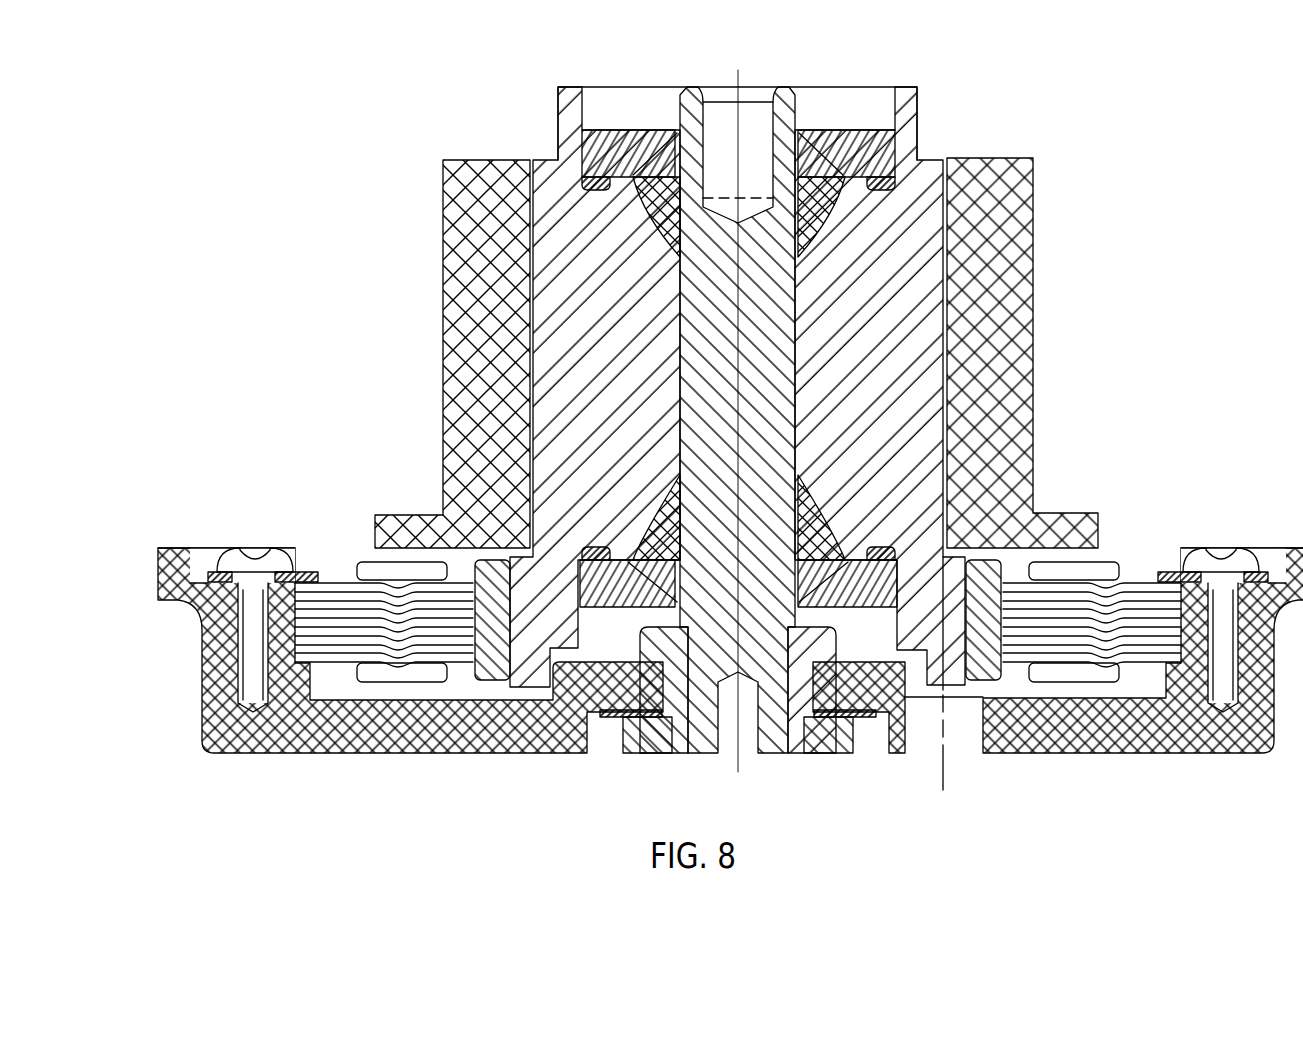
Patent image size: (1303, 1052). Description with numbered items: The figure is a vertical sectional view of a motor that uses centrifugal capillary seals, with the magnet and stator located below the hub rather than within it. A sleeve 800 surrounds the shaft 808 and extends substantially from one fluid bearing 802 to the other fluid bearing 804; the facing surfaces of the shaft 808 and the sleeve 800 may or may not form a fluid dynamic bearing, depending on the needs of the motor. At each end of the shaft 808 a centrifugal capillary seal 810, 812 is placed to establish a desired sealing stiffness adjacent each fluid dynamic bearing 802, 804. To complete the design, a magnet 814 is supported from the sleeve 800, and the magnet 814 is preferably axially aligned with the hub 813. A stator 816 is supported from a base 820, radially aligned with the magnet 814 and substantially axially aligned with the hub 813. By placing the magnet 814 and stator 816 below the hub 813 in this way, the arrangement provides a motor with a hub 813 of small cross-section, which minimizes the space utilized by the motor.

The sleeve 800 is at (900, 418).
The fluid bearing 802 is at (913, 158).
The fluid bearing 804 is at (838, 532).
The shaft 808 is at (783, 108).
The centrifugal capillary seal 810 is at (810, 175).
The centrifugal capillary seal 812 is at (858, 610).
The hub 813 is at (458, 355).
The magnet 814 is at (498, 663).
The stator 816 is at (343, 645).
The base 820 is at (222, 728).